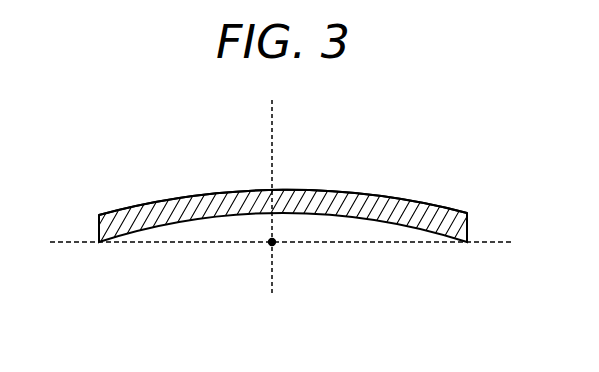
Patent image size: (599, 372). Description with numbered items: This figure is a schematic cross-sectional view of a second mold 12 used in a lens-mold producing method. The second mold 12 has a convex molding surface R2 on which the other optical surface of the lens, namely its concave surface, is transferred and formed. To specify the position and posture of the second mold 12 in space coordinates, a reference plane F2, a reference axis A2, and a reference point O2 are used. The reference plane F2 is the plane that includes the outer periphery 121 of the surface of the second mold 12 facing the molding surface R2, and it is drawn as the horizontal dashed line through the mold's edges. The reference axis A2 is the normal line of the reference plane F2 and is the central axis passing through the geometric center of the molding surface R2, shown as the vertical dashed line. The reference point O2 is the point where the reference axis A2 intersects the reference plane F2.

The second mold 12 is at (100, 217).
The outer periphery 121 is at (99, 245).
The reference axis A2 is at (274, 183).
The convex molding surface R2 is at (378, 192).
The reference point O2 is at (275, 245).
The reference plane F2 is at (499, 245).